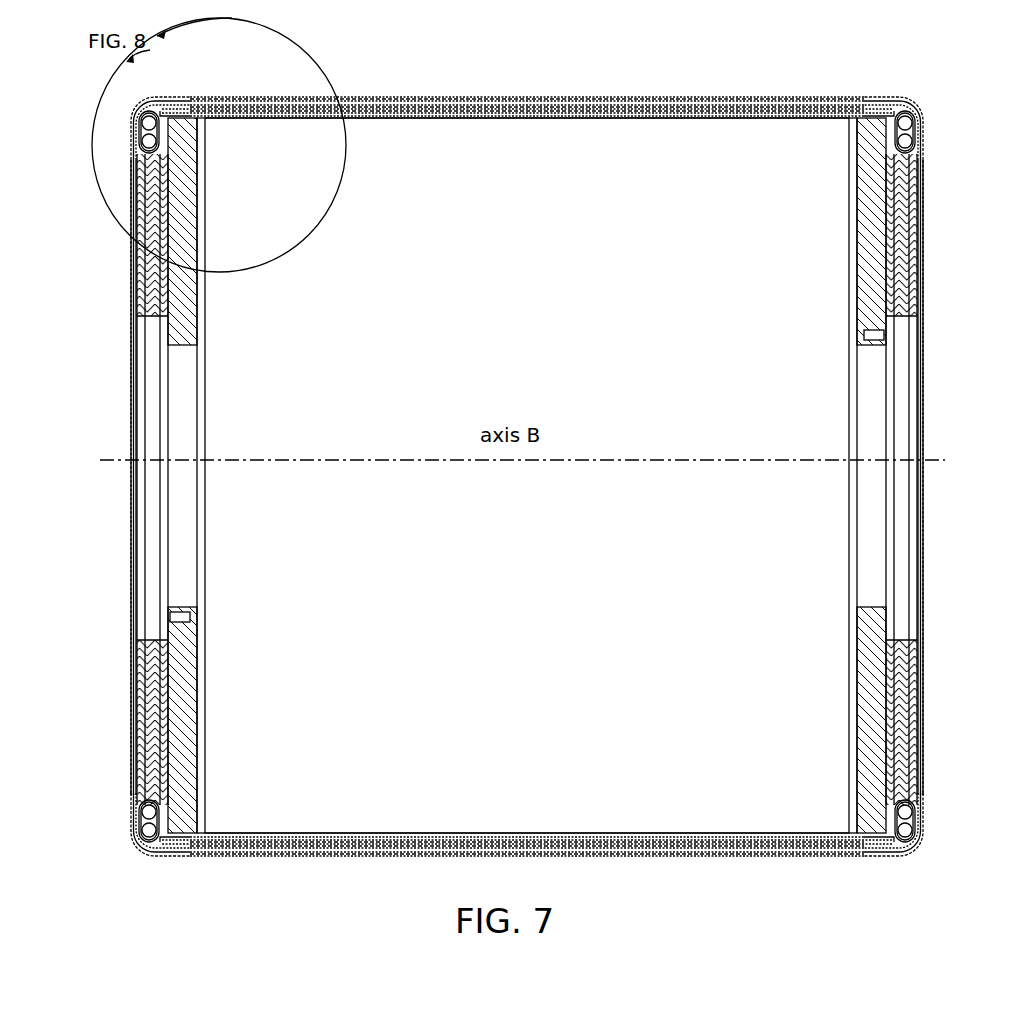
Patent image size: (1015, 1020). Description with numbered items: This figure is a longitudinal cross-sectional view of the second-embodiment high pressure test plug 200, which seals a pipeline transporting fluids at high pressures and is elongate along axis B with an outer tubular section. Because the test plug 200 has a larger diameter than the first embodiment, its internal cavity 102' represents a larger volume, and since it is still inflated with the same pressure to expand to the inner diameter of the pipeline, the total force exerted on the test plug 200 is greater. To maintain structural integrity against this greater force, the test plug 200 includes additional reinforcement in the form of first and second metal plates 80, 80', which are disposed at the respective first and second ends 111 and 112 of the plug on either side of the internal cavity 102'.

The high pressure test plug 200 is at (712, 79).
The first metal plate 80 is at (245, 475).
The second metal plate 80' is at (811, 475).
The internal cavity 102' is at (527, 475).
The first end 111 is at (123, 442).
The second end 112 is at (933, 765).